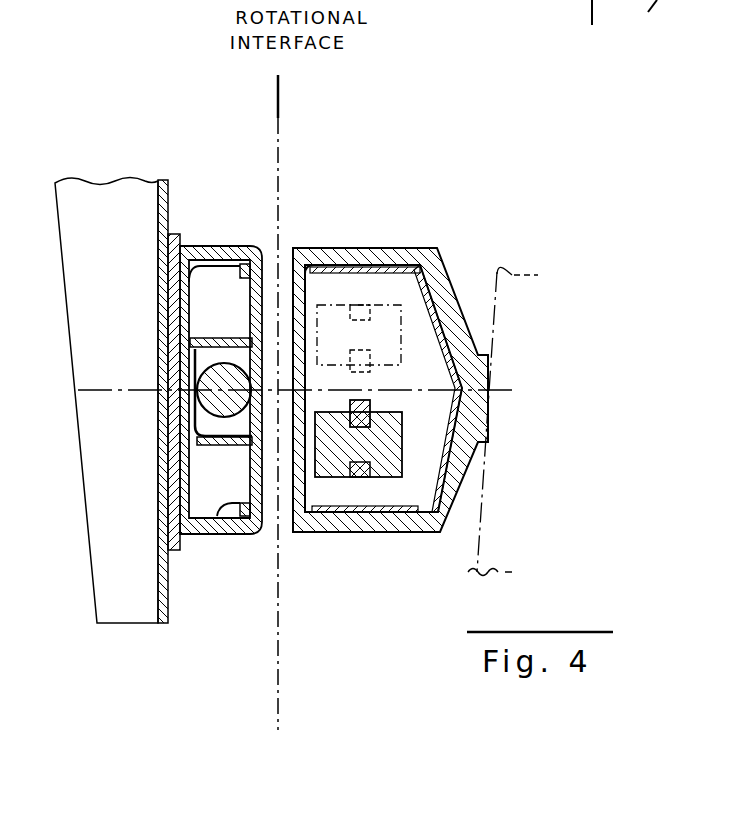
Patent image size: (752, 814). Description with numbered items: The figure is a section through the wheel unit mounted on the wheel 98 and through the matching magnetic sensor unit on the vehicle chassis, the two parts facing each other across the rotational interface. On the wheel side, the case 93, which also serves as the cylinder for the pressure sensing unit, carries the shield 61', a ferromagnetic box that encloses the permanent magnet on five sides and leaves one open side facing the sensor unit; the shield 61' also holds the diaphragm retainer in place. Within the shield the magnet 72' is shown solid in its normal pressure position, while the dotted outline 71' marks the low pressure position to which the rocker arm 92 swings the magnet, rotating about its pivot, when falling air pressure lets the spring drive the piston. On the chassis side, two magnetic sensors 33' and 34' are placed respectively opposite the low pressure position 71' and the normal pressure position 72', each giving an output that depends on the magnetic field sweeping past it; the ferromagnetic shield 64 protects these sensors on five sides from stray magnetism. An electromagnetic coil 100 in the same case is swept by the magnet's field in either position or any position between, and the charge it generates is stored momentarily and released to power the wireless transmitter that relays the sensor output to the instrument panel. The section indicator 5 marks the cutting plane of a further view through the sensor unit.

The magnetic sensor 33' is at (215, 228).
The magnetic sensor 34' is at (227, 534).
The electromagnetic coil 100 is at (236, 375).
The ferromagnetic shield 64 is at (198, 538).
The section line 5- 5 is at (258, 243).
The low pressure position of the magnet 71' is at (365, 287).
The shield 61' is at (399, 376).
The rocker arm 92 is at (371, 405).
The case 93 is at (321, 534).
The normal pressure position of the magnet 72' is at (358, 511).
The wheel 98 is at (476, 538).